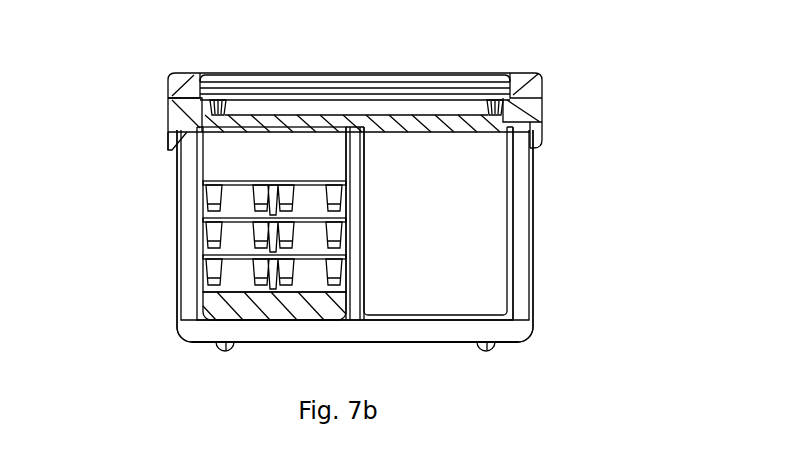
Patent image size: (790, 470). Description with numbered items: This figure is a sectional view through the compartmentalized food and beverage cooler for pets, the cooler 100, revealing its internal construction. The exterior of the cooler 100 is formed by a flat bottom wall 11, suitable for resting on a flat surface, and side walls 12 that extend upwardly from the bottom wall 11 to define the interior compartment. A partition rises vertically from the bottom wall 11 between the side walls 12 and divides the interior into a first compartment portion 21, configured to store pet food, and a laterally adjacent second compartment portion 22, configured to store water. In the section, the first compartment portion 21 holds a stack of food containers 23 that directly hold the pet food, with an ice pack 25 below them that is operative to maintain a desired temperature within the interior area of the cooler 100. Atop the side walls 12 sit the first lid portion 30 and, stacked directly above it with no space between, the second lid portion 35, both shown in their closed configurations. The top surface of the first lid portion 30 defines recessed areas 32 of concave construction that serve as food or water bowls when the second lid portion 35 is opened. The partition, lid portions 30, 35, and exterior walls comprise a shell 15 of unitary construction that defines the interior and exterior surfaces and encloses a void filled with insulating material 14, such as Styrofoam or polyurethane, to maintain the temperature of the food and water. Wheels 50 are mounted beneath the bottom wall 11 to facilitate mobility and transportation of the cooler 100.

The cooler 100 is at (424, 187).
The bottom wall 11 is at (355, 381).
The side walls 12 is at (355, 236).
The insulating material 14 is at (345, 252).
The shell 15 is at (486, 257).
The first compartment portion 21 is at (206, 209).
The second compartment portion 22 is at (505, 221).
The food containers 23 is at (220, 258).
The ice packs 25 is at (274, 337).
The first lid portion 30 is at (310, 124).
The recessed areas 32 is at (356, 63).
The second lid portion 35 is at (310, 79).
The wheels 50 is at (361, 374).